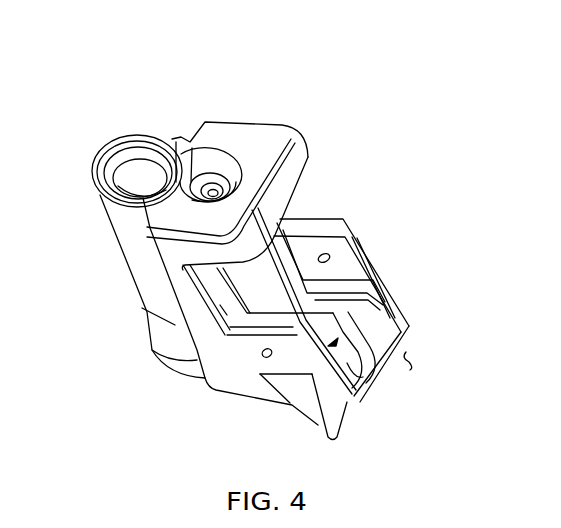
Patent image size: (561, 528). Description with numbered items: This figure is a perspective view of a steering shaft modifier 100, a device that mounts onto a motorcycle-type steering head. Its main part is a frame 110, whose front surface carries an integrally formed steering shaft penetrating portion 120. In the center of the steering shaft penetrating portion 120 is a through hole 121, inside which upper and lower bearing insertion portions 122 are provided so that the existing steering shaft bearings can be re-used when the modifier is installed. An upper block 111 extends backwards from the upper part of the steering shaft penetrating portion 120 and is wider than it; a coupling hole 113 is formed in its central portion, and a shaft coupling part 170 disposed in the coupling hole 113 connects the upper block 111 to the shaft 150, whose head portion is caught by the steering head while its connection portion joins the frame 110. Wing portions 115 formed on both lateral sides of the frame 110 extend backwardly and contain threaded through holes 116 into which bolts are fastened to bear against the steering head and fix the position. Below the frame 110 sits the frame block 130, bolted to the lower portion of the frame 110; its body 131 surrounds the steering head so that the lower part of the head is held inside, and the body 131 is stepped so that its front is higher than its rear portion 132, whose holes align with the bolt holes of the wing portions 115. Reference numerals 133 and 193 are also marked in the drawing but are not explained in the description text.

The steering shaft modifier 100 is at (173, 30).
The frame 110 is at (245, 120).
The upper block 111 is at (293, 136).
The coupling hole 113 is at (207, 152).
The wing portions 115 is at (345, 218).
The through holes 116 is at (333, 255).
The steering shaft penetrating portion 120 is at (130, 142).
The through hole 121 is at (100, 171).
The bearing insertion portions 122 is at (123, 169).
The frame block 130 is at (406, 300).
The body 131 is at (412, 327).
The rear portion 132 is at (385, 392).
The stem 133 is at (330, 368).
The shaft 150 is at (412, 364).
The shaft coupling part 170 is at (186, 156).
The channel 193 is at (225, 277).